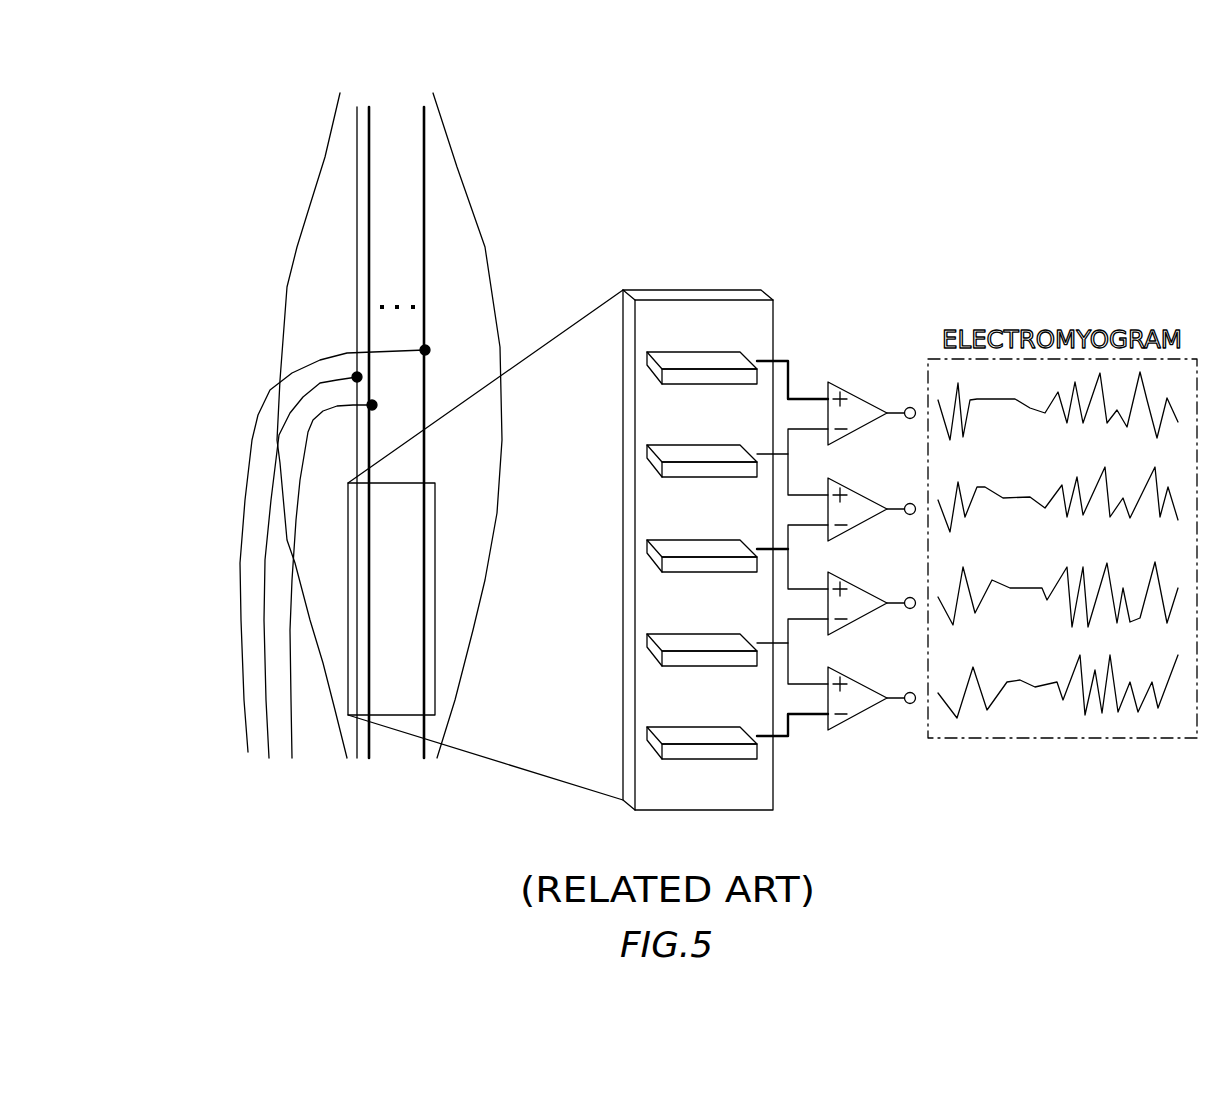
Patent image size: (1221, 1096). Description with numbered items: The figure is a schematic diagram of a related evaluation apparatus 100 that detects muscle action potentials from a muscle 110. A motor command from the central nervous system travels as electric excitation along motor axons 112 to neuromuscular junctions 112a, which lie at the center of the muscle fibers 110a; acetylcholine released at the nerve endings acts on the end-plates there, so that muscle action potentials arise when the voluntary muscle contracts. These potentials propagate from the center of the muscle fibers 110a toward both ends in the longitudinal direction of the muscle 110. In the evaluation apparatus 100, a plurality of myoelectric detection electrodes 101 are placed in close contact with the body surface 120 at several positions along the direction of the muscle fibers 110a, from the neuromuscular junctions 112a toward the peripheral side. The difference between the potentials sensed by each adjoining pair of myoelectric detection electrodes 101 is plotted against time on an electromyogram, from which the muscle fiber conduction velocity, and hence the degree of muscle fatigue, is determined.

The evaluation apparatus 100 is at (998, 113).
The myoelectric detection electrodes 101 is at (764, 548).
The muscle 110 is at (428, 425).
The muscle fibers 110a is at (317, 432).
The motor axons 112 is at (278, 554).
The neuromuscular junctions 112a is at (318, 344).
The body surface 120 is at (513, 425).